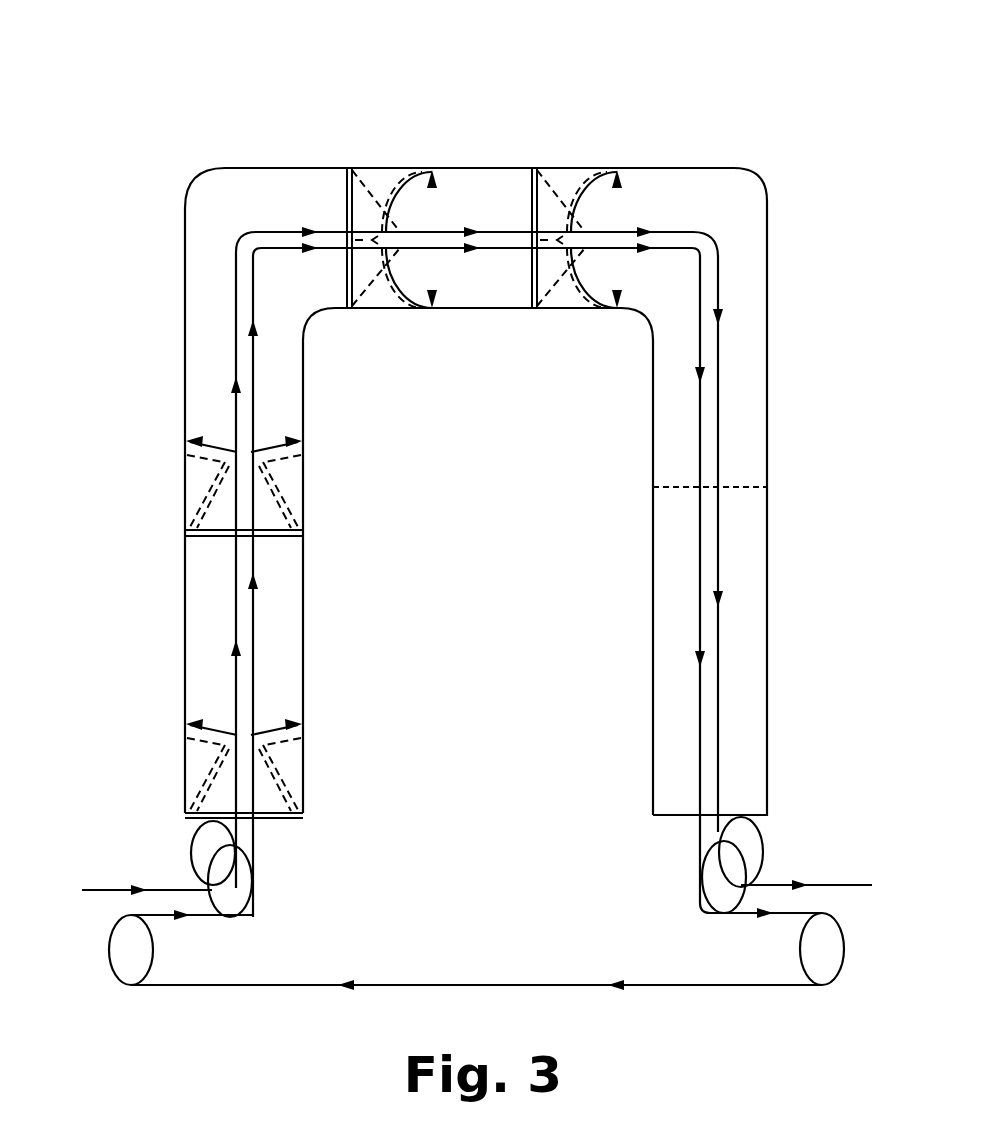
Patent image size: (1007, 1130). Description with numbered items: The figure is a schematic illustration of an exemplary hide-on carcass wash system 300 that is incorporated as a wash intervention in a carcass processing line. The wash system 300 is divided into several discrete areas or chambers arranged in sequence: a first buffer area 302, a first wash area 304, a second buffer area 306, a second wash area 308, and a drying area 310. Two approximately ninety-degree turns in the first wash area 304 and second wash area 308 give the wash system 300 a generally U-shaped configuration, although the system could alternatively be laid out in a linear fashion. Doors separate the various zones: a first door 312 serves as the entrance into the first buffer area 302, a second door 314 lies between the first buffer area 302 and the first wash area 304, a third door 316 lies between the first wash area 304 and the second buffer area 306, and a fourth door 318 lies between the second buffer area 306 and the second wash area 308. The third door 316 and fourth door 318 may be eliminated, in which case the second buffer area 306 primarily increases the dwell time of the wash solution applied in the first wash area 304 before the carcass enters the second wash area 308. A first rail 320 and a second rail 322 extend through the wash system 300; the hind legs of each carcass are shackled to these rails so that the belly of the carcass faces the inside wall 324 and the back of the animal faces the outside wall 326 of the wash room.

The carcass wash system 300 is at (384, 70).
The first buffer area 302 is at (183, 685).
The first wash area 304 is at (196, 421).
The second buffer area 306 is at (435, 170).
The second wash area 308 is at (645, 180).
The drying area 310 is at (757, 652).
The first door 312 is at (275, 822).
The second door 314 is at (198, 537).
The third door 316 is at (343, 177).
The fourth door 318 is at (520, 187).
The first rail 320 is at (100, 890).
The second rail 322 is at (255, 678).
The inside wall 324 is at (303, 357).
The outside wall 326 is at (767, 225).